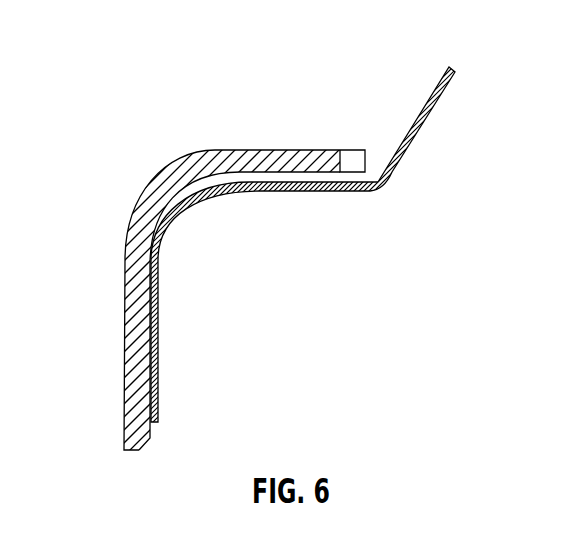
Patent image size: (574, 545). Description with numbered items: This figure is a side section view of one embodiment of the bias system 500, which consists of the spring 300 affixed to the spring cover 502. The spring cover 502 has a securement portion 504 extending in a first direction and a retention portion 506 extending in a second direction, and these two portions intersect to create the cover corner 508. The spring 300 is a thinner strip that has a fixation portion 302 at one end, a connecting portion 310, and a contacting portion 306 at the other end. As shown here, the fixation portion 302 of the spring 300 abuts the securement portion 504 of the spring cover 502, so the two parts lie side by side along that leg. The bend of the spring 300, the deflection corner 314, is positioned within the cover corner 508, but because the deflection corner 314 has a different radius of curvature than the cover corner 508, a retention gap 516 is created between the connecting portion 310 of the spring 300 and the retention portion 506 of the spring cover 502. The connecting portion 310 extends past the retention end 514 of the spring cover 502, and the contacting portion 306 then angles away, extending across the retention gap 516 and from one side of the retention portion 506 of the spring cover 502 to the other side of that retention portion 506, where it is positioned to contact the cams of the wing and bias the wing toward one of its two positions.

The bias system 500 is at (137, 55).
The spring cover 502 is at (125, 288).
The securement portion 504 is at (124, 374).
The retention portion 506 is at (295, 150).
The cover corner 508 is at (158, 176).
The retention end 514 is at (377, 150).
The retention gap 516 is at (292, 181).
The spring 300 is at (432, 113).
The fixation portion 302 is at (159, 356).
The contacting portion 306 is at (409, 148).
The connecting portion 310 is at (357, 192).
The deflection corner 314 is at (177, 204).